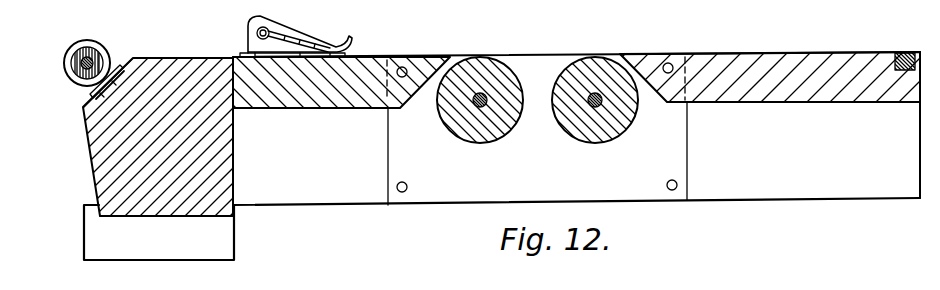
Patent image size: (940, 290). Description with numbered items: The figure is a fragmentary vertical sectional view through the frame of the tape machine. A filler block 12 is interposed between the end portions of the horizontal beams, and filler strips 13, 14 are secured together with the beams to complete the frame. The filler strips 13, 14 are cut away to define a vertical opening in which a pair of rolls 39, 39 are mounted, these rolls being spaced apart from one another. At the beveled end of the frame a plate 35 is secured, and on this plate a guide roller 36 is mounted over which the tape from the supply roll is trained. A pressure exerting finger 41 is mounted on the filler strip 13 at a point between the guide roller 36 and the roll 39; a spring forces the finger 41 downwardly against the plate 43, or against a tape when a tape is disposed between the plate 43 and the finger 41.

The filler block 12 is at (84, 123).
The filler strip 13 is at (374, 64).
The filler strip 14 is at (781, 62).
The plate 35 is at (95, 98).
The guide roller 36 is at (87, 46).
The roll 39 is at (487, 128).
The pressure exerting finger 41 is at (295, 38).
The plate 43 is at (298, 57).